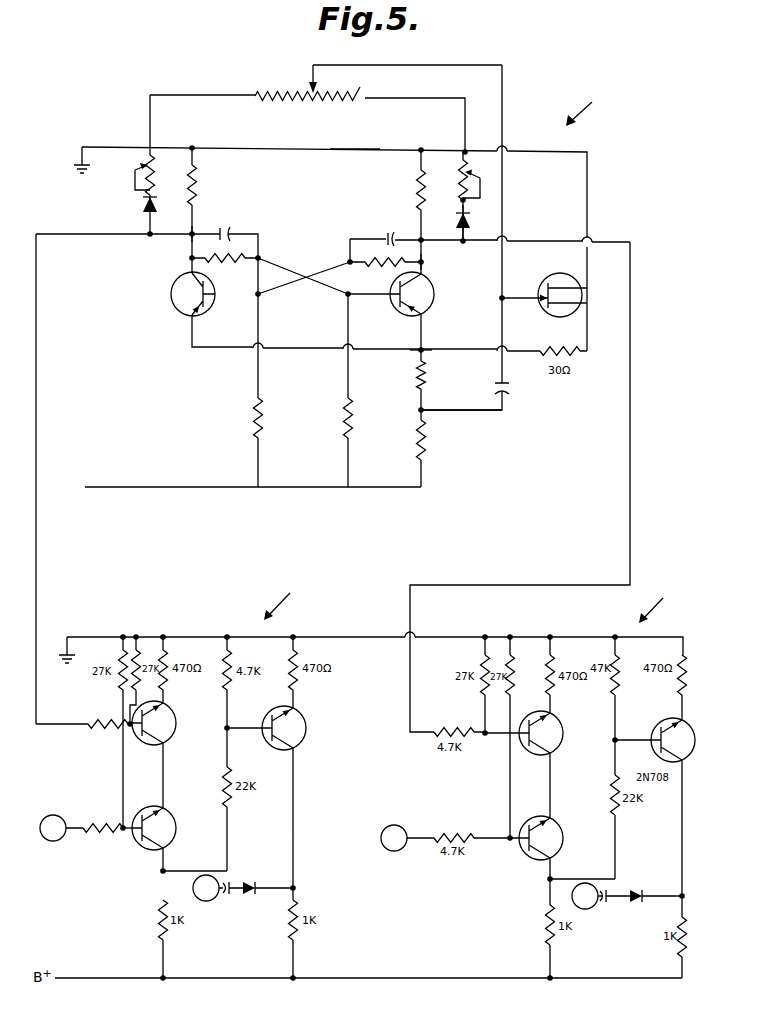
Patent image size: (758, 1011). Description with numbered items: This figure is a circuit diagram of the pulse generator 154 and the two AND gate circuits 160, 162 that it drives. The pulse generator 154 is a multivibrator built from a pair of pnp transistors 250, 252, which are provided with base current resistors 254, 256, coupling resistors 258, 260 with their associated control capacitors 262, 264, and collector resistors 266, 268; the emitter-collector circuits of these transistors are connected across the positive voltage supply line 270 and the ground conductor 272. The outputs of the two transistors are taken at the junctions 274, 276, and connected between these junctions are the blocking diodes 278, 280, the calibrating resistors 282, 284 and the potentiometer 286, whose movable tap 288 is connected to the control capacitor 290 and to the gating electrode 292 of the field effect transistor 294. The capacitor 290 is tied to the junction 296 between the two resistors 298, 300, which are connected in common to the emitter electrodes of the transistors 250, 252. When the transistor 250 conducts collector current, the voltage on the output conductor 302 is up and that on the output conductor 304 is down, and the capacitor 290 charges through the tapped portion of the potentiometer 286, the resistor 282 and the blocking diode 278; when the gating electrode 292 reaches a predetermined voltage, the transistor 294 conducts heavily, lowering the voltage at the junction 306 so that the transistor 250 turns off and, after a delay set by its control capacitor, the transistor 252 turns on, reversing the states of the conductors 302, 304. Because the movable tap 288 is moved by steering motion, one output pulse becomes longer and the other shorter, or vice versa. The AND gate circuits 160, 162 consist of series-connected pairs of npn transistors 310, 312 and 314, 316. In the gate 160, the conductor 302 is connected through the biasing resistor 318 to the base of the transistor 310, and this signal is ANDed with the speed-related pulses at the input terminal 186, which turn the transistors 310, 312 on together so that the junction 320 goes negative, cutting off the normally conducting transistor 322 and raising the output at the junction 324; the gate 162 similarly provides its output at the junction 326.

The pulse generator 154 is at (602, 106).
The AND gate circuit 160 is at (299, 602).
The AND gate circuit 162 is at (674, 605).
The input terminal 186 is at (60, 843).
The pnp transistor 250 is at (177, 313).
The pnp transistor 252 is at (435, 286).
The base current resistor 254 is at (261, 402).
The base current resistor 256 is at (349, 405).
The coupling resistor 258 is at (243, 252).
The coupling resistor 260 is at (361, 260).
The control capacitor 262 is at (243, 225).
The control capacitor 264 is at (386, 230).
The collector resistor 266 is at (195, 178).
The collector resistor 268 is at (427, 187).
The positive voltage supply line 270 is at (323, 488).
The ground conductor 272 is at (349, 150).
The junction 274 is at (207, 229).
The junction 276 is at (424, 244).
The blocking diode 278 is at (133, 202).
The blocking diode 280 is at (471, 213).
The calibrating resistor 282 is at (154, 155).
The calibrating resistor 284 is at (471, 167).
The potentiometer 286 is at (300, 102).
The movable tap 288 is at (313, 66).
The control capacitor 290 is at (507, 380).
The gating electrode 292 is at (520, 300).
The field effect transistor 294 is at (582, 274).
The junction 296 is at (425, 411).
The resistor 298 is at (428, 385).
The resistor 300 is at (426, 457).
The output conductor 302 is at (36, 337).
The output conductor 304 is at (633, 363).
The junction 306 is at (422, 349).
The npn transistor 310 is at (163, 704).
The npn transistor 312 is at (164, 815).
The npn transistor 314 is at (552, 714).
The npn transistor 316 is at (553, 820).
The biasing resistor 318 is at (102, 724).
The junction 320 is at (164, 873).
The npn transistor 322 is at (292, 708).
The junction 324 is at (216, 878).
The output junction 326 is at (590, 909).